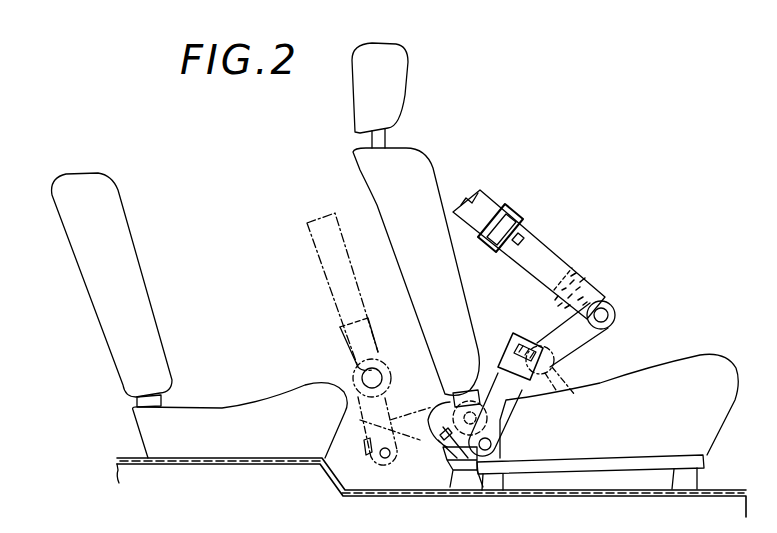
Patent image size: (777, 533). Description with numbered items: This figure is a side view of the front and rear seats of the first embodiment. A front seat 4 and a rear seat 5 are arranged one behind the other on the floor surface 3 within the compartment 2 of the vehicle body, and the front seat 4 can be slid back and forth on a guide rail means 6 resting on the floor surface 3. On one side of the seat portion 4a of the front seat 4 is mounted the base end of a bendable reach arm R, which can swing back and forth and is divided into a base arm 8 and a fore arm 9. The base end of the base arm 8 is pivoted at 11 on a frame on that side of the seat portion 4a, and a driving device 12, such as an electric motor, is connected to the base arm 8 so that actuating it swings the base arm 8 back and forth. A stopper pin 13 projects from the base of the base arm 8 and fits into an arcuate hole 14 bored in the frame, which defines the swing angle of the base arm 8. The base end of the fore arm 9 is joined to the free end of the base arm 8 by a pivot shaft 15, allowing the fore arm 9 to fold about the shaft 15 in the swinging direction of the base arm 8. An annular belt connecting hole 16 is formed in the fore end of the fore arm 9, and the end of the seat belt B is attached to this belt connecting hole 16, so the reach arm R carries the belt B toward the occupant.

The compartment 2 is at (214, 277).
The floor surface 3 is at (358, 482).
The front seat 4 is at (427, 177).
The seat portion 4a is at (661, 373).
The rear seat 5 is at (123, 232).
The guide rail means 6 is at (706, 465).
The base arm 8 is at (418, 434).
The fore arm 9 is at (390, 433).
The pivot 11 is at (502, 432).
The driving device 12 is at (463, 395).
The stopper pin 13 is at (443, 430).
The arcuate hole 14 is at (450, 450).
The pivot shaft 15 is at (552, 358).
The belt connecting hole 16 is at (607, 315).
The seat belt B is at (322, 268).
The reach arm R is at (430, 380).